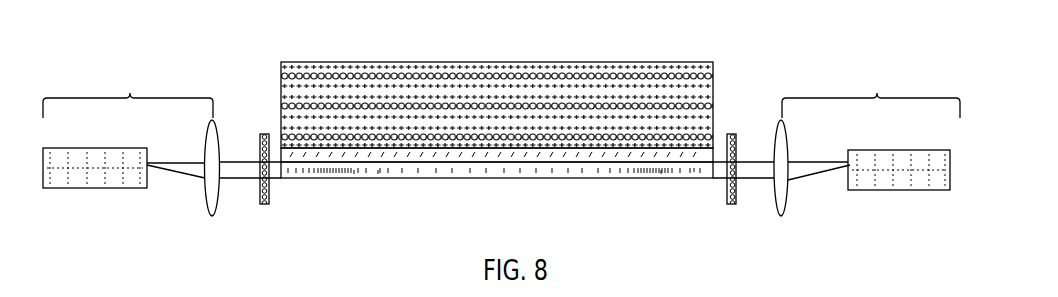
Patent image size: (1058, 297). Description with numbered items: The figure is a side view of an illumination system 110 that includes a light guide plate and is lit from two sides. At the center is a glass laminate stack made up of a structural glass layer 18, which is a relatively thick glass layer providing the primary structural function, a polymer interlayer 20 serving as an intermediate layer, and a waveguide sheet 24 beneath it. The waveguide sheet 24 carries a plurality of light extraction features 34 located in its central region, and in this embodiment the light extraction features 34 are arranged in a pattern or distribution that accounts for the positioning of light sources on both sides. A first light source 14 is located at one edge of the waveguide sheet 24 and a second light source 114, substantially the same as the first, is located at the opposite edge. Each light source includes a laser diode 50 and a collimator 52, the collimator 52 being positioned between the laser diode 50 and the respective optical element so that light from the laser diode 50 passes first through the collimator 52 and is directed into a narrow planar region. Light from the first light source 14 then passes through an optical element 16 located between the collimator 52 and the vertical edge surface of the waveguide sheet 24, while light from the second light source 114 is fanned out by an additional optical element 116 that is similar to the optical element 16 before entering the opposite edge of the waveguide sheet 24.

The illumination system 110 is at (819, 49).
The first light source 14 is at (128, 90).
The second light source 114 is at (871, 92).
The laser diode 50 is at (74, 185).
The collimator 52 is at (213, 207).
The optical element 16 is at (263, 205).
The additional optical element 116 is at (737, 197).
The structural glass layer 18 is at (703, 63).
The polymer interlayer 20 is at (705, 158).
The waveguide sheet 24 is at (500, 182).
The light extraction features 34 is at (376, 174).